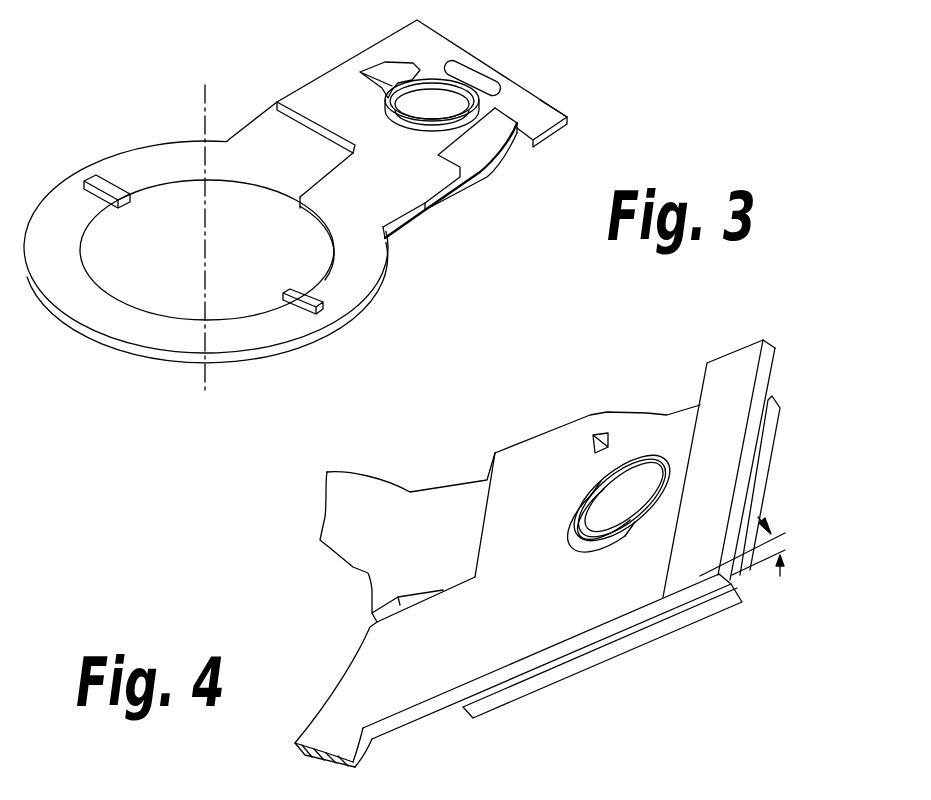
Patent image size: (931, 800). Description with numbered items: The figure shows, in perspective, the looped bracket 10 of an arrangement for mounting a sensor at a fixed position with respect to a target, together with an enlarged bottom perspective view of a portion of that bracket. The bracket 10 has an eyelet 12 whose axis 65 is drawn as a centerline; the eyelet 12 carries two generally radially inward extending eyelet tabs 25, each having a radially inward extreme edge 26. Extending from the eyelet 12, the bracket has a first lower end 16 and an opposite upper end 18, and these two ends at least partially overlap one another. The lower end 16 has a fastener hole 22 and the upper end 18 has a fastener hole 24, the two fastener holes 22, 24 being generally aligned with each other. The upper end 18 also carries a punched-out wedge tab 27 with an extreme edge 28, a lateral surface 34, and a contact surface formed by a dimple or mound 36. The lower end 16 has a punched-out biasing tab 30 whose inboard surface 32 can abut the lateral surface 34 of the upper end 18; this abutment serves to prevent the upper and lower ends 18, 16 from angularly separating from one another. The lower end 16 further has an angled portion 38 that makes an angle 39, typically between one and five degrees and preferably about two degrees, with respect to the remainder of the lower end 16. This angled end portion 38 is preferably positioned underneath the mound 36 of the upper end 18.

In FIG. 3, the bracket 10 is at (149, 160).
In FIG. 4, the bracket 10 is at (429, 500).
In FIG. 3, the eyelet 12 is at (95, 313).
In FIG. 4, the eyelet 12 is at (333, 482).
In FIG. 3, the first lower end 16 is at (567, 124).
In FIG. 4, the first lower end 16 is at (777, 350).
In FIG. 3, the upper end 18 is at (430, 43).
In FIG. 4, the upper end 18 is at (775, 397).
In FIG. 4, the fastener hole 22 is at (578, 510).
In FIG. 4, the fastener hole 24 is at (637, 483).
In FIG. 3, the eyelet tabs 25 is at (288, 298).
In FIG. 3, the radially inward extreme edge 26 is at (125, 205).
In FIG. 3, the wedge tab 27 is at (383, 63).
In FIG. 3, the extreme edge 28 is at (388, 100).
In FIG. 3, the biasing tab 30 is at (500, 155).
In FIG. 4, the biasing tab 30 is at (647, 416).
In FIG. 4, the inboard surface 32 is at (597, 450).
In FIG. 3, the lateral surface 34 is at (540, 100).
In FIG. 3, the dimple or mound 36 is at (478, 80).
In FIG. 4, the angled portion 38 is at (738, 363).
In FIG. 4, the angle 39 is at (785, 545).
In FIG. 3, the axis 65 is at (202, 385).